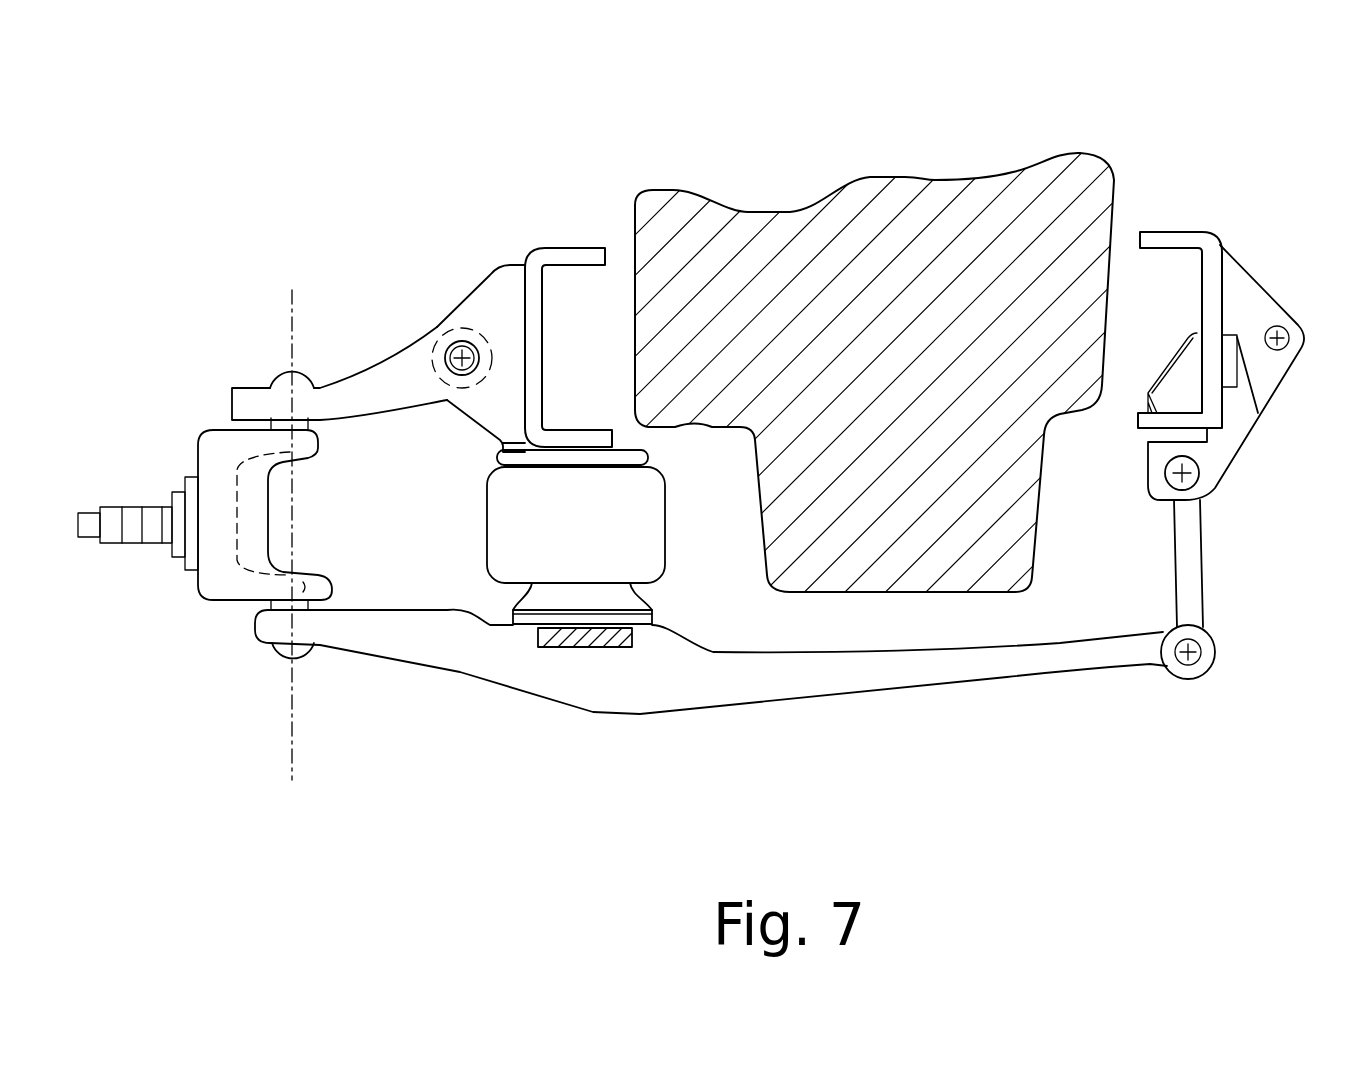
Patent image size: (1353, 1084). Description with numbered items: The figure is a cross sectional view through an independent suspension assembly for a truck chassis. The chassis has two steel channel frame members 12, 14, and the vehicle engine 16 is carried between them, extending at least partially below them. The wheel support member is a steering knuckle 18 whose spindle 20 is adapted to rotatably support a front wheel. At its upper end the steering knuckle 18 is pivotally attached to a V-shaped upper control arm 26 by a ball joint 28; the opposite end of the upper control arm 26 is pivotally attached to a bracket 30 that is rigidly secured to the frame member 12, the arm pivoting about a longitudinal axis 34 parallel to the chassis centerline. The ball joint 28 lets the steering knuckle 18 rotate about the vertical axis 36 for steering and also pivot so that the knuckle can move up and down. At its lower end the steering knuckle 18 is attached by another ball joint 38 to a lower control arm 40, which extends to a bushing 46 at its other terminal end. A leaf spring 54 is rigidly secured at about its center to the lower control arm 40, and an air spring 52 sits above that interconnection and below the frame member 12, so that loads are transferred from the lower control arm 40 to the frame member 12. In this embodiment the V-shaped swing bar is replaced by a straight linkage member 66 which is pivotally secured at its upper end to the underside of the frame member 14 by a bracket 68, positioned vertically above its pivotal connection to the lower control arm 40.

The frame member 12 is at (547, 258).
The frame member 14 is at (1170, 236).
The vehicle engine 16 is at (937, 200).
The steering knuckle 18 is at (218, 573).
The spindle 20 is at (150, 508).
The upper control arm 26 is at (398, 373).
The ball joint 28 is at (270, 373).
The bracket 30 is at (498, 293).
The longitudinal axis 34 is at (460, 350).
The vertical axis 36 is at (295, 752).
The ball joint 38 is at (270, 660).
The lower control arm 40 is at (538, 668).
The bushing 46 is at (1218, 641).
The air spring 52 is at (500, 528).
The leaf spring 54 is at (595, 647).
The straight linkage member 66 is at (1185, 568).
The bracket 68 is at (1210, 458).